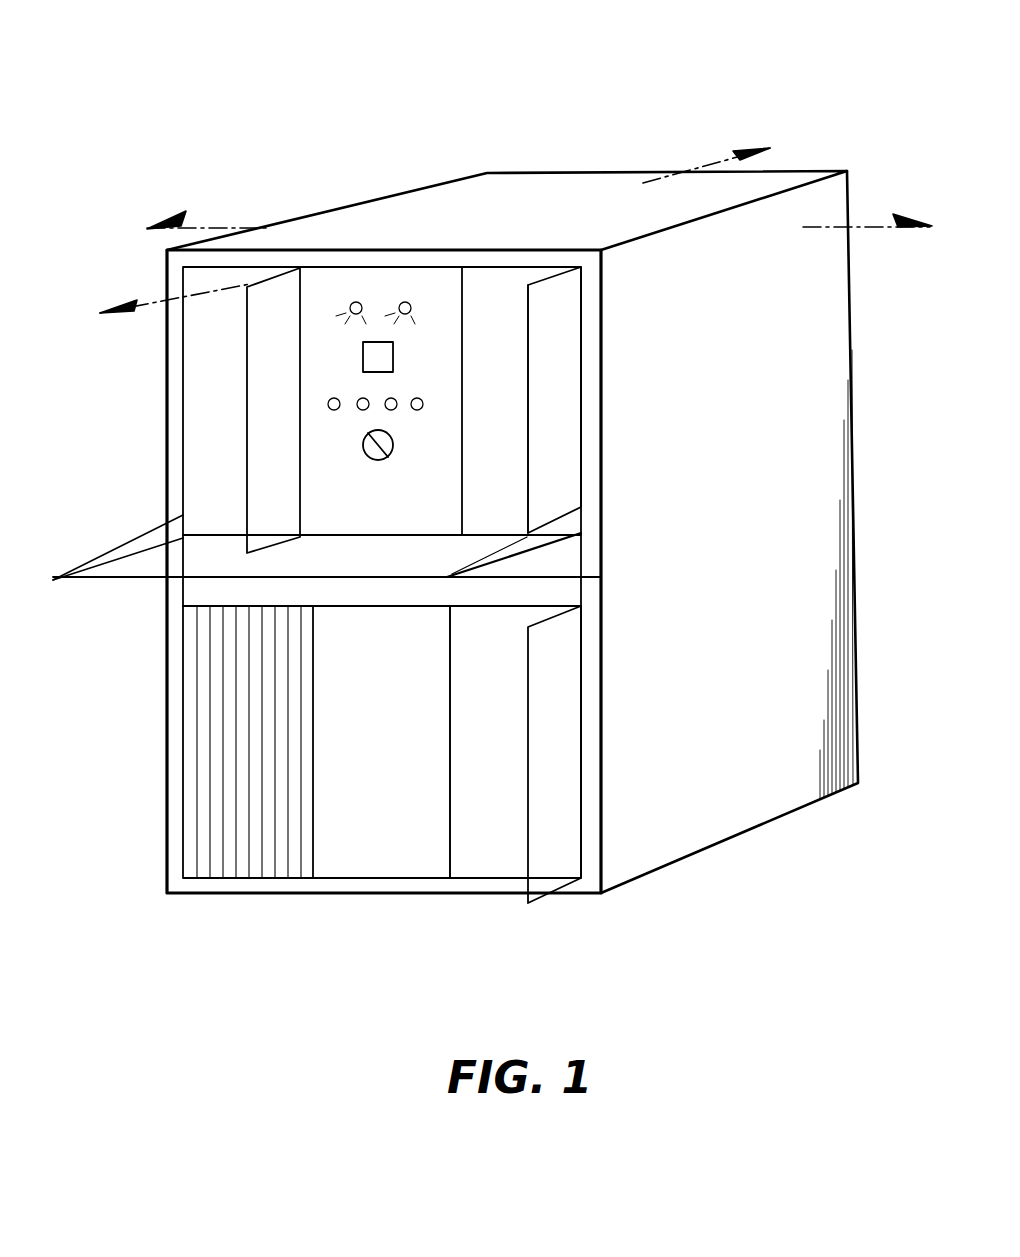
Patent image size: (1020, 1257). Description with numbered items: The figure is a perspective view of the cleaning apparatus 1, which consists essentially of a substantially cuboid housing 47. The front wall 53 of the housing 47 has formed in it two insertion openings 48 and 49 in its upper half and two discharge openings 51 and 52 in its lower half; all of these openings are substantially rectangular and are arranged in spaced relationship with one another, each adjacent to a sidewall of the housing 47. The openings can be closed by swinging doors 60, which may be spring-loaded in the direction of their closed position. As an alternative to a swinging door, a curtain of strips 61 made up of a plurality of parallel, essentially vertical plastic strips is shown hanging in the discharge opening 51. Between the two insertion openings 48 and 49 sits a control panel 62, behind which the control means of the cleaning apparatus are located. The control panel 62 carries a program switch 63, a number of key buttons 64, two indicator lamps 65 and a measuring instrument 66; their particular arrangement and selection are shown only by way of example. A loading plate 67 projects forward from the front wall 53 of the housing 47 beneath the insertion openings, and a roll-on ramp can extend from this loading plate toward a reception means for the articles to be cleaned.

The cleaning apparatus 1 is at (366, 142).
The housing 47 is at (613, 140).
The insertion opening 48 is at (218, 410).
The insertion opening 49 is at (522, 452).
The discharge opening 51 is at (246, 822).
The discharge opening 52 is at (470, 797).
The front wall 53 is at (562, 570).
The swinging doors 60 is at (277, 295).
The curtain of strips 61 is at (207, 712).
The control panel 62 is at (414, 272).
The program switch 63 is at (393, 440).
The key buttons 64 is at (423, 404).
The indicator lamps 65 is at (412, 306).
The measuring instrument 66 is at (393, 357).
The loading plate 67 is at (165, 568).